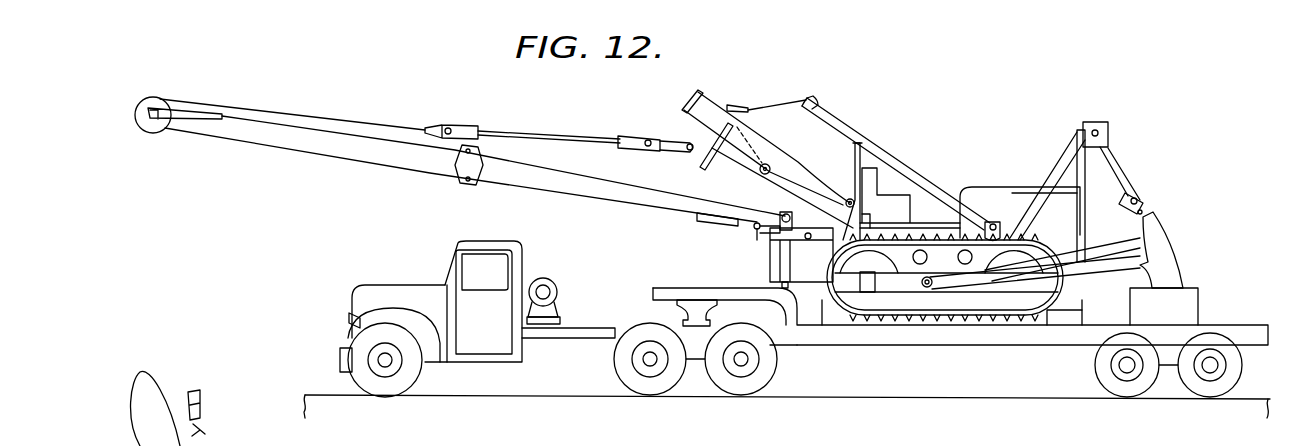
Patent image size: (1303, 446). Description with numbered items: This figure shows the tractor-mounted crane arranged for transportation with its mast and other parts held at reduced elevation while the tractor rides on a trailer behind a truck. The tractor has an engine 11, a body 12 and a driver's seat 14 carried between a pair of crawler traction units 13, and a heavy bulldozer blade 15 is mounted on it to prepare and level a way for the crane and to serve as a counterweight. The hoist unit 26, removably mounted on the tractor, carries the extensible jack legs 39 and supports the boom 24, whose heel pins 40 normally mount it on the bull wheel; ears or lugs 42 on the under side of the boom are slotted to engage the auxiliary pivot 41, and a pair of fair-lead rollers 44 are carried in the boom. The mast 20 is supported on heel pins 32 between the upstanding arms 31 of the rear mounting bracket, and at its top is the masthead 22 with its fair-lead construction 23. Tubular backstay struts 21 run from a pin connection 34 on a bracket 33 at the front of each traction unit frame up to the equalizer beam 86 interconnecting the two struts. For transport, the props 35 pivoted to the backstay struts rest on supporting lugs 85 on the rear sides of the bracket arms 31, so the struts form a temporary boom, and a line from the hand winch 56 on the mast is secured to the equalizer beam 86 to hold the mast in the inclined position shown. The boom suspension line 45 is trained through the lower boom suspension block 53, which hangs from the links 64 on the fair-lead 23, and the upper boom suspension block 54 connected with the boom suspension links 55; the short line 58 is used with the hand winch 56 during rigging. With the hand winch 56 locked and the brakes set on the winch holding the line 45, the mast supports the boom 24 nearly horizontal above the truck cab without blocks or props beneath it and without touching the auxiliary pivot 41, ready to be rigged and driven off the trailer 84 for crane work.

The engine 11 is at (1000, 187).
The body 12 is at (945, 228).
The crawler traction units 13 is at (1065, 290).
The driver's seat 14 is at (878, 170).
The bulldozer blade 15 is at (1168, 262).
The mast 20 is at (802, 165).
The tubular backstay struts 21 is at (896, 146).
The masthead 22 is at (704, 109).
The fair-lead construction 23 is at (690, 152).
The boom 24 is at (400, 172).
The hoist unit 26 is at (772, 265).
The upstanding arms 31 is at (847, 213).
The heel pins 32 is at (849, 199).
The bracket 33 is at (1002, 227).
The pin connection 34 is at (993, 223).
The props 35 is at (853, 148).
The extensible jack legs 39 is at (780, 286).
The heel pins 40 is at (794, 214).
The auxiliary pivot 41 is at (761, 238).
The ears or lugs 42 is at (755, 229).
The fair-lead rollers 44 is at (722, 225).
The boom suspension line 45 is at (486, 132).
The lower boom suspension block 53 is at (622, 148).
The upper boom suspension block 54 is at (478, 126).
The boom suspension links 55 is at (325, 122).
The hand winch 56 is at (757, 172).
The short line 58 is at (762, 118).
The links 64 is at (666, 152).
The trailer 84 is at (1245, 325).
The supporting lugs 85 is at (866, 218).
The equalizer beam 86 is at (814, 100).